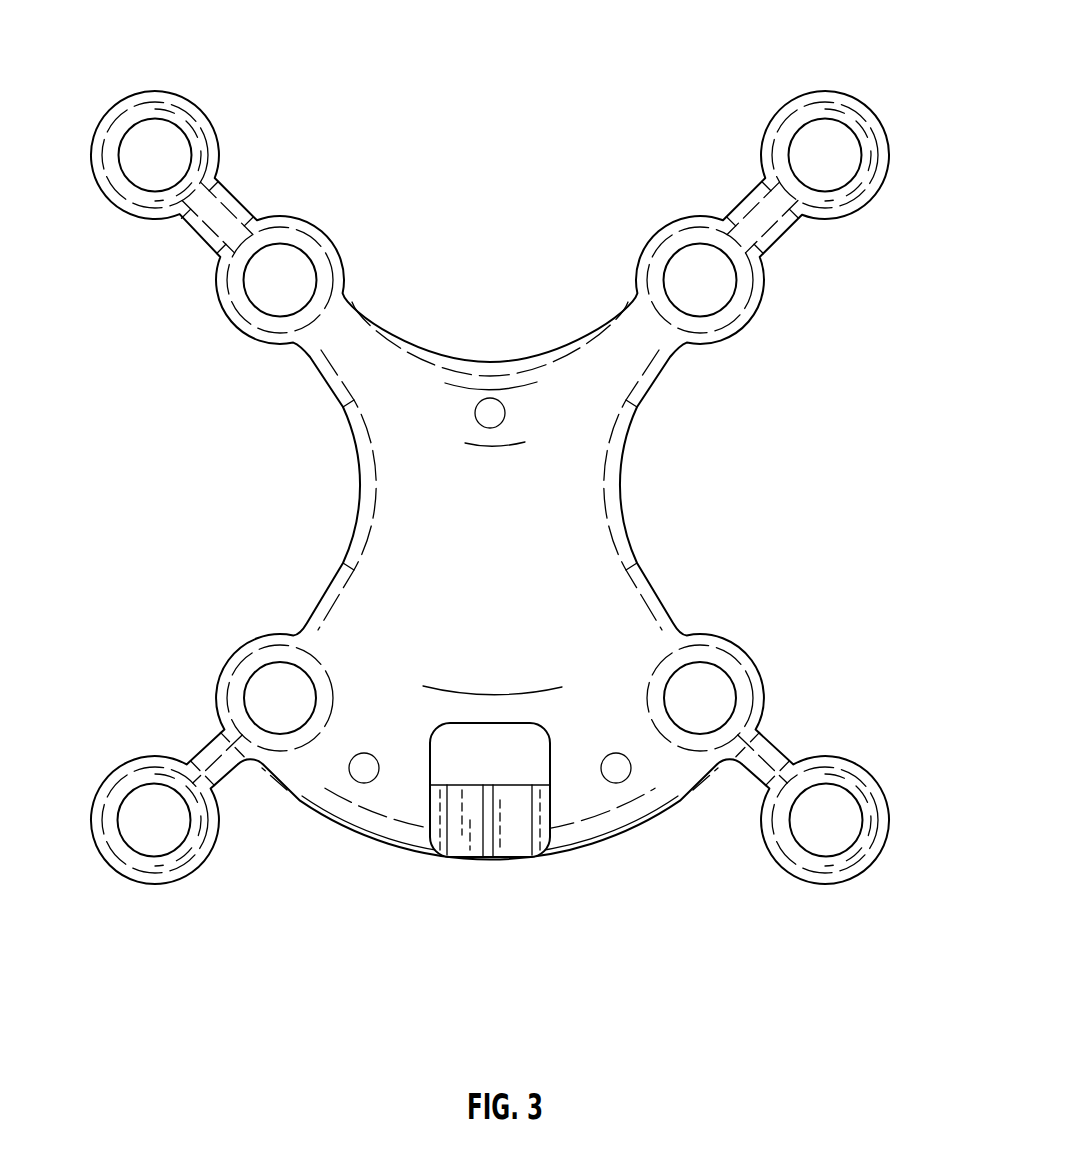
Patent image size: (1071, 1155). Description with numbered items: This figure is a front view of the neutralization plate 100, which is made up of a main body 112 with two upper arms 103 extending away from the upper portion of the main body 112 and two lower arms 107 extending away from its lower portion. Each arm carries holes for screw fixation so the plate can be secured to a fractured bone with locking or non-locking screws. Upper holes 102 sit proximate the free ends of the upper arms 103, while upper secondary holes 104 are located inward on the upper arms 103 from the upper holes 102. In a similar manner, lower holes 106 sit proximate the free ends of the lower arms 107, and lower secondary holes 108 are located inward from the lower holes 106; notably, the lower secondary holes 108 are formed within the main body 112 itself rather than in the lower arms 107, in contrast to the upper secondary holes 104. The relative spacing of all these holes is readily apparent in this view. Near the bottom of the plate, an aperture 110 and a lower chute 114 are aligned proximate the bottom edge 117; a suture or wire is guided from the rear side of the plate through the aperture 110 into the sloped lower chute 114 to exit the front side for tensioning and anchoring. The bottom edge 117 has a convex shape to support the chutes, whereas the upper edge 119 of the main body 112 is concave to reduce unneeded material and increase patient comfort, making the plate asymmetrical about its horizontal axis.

The neutralization plate 100 is at (887, 67).
The upper holes 102 is at (128, 153).
The upper arms 103 is at (197, 127).
The upper secondary holes 104 is at (272, 288).
The lower holes 106 is at (130, 812).
The lower arms 107 is at (153, 889).
The lower secondary holes 108 is at (263, 688).
The aperture 110 is at (480, 757).
The main body 112 is at (583, 500).
The lower chute 114 is at (497, 848).
The bottom edge 117 is at (597, 841).
The upper edge 119 is at (543, 353).